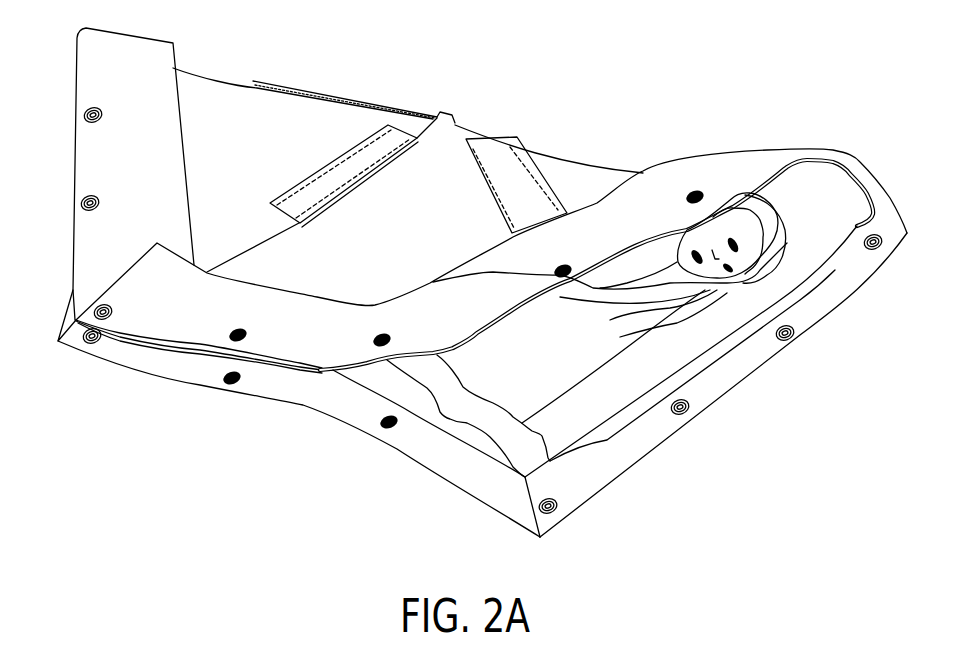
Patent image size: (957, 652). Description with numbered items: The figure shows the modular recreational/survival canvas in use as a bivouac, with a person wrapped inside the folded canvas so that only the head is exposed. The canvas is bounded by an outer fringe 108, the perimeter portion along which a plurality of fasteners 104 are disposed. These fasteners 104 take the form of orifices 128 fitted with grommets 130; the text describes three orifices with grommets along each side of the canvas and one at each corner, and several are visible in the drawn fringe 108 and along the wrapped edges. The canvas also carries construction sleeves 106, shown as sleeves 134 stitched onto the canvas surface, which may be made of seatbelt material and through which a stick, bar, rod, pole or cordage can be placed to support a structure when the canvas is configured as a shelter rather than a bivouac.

The fasteners 104 is at (718, 434).
The construction sleeves 106 is at (549, 161).
The outer fringe 108 is at (98, 62).
The orifices 128 is at (83, 202).
The grommets 130 is at (80, 212).
The sleeves 134 is at (523, 181).